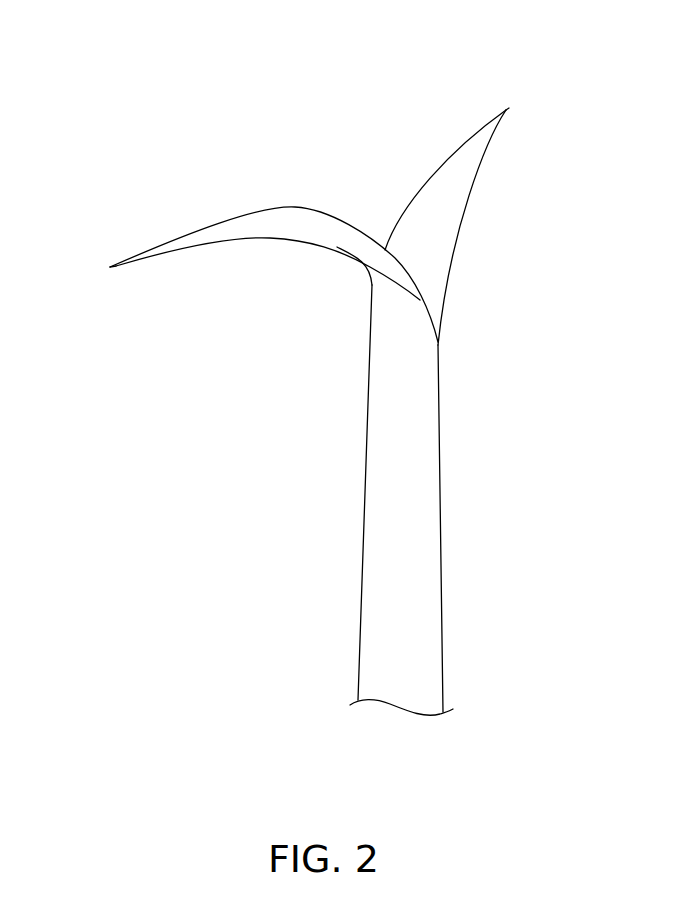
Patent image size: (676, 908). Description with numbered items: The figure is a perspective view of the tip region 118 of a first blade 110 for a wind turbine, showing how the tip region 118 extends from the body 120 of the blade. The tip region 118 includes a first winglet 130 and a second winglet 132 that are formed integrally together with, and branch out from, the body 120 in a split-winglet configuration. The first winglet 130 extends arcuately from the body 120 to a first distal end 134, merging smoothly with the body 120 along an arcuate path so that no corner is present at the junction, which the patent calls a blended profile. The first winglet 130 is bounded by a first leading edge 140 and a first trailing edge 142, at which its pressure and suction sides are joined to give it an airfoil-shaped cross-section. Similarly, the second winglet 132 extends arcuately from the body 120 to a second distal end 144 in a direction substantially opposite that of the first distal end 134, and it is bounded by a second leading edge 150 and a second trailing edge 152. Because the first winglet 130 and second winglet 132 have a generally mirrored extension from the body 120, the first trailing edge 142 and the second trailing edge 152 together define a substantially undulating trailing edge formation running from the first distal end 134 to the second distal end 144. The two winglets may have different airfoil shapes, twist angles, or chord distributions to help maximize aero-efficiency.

The first blade 110 is at (141, 69).
The tip region 118 is at (339, 261).
The body 120 is at (358, 534).
The first winglet 130 is at (236, 220).
The second winglet 132 is at (462, 144).
The first distal end 134 is at (110, 266).
The first leading edge 140 is at (198, 247).
The first trailing edge 142 is at (178, 235).
The second distal end 144 is at (509, 108).
The second leading edge 150 is at (487, 163).
The second trailing edge 152 is at (420, 178).